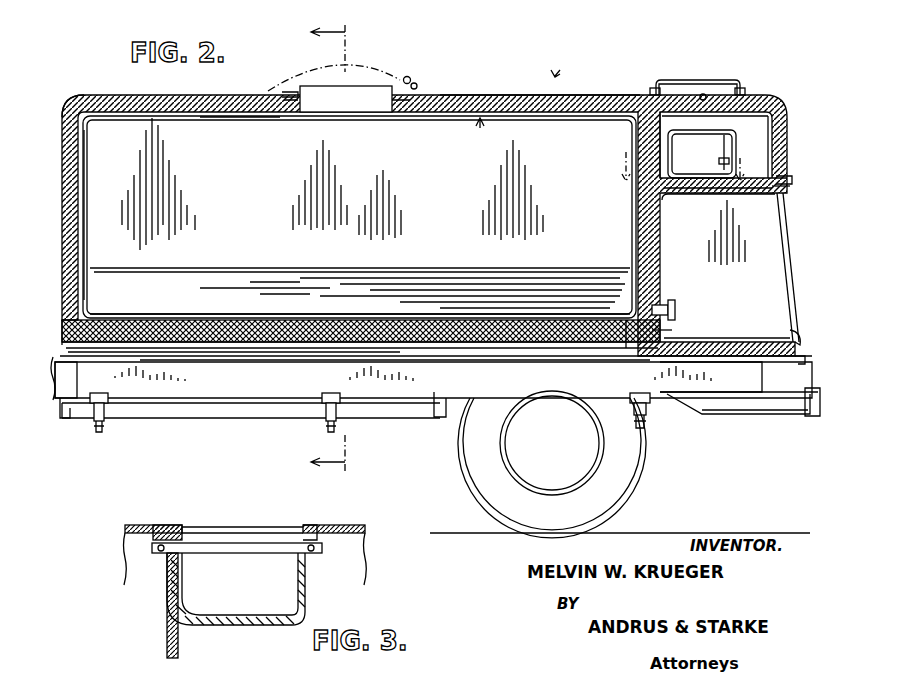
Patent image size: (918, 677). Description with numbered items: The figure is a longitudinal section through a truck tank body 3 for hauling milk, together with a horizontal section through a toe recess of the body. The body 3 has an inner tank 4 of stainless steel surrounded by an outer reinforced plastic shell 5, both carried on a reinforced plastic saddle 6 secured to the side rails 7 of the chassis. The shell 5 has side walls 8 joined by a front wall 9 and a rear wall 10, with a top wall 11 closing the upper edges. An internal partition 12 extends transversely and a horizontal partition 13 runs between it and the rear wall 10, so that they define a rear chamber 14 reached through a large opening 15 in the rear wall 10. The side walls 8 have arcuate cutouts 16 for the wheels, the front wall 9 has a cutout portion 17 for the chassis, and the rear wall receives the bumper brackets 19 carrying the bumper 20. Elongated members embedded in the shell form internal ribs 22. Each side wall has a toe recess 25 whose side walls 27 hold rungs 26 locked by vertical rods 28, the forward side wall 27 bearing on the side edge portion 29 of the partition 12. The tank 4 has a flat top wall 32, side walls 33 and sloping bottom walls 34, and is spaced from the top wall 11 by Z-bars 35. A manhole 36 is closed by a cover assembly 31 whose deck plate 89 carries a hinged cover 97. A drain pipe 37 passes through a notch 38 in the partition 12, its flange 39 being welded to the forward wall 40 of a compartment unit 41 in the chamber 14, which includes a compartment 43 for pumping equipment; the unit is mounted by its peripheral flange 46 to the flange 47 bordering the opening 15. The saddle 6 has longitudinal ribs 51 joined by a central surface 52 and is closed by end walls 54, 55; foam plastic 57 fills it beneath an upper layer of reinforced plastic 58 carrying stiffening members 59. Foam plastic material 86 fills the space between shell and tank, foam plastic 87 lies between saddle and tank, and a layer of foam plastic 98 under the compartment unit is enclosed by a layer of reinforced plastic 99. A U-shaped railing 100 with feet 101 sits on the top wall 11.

In FIG. 2, the tank body 3 is at (556, 76).
In FIG. 2, the inner tank 4 is at (399, 247).
In FIG. 2, the outer reinforced plastic shell 5 is at (596, 95).
In FIG. 2, the saddle 6 is at (211, 320).
In FIG. 2, the side rails 7 is at (196, 398).
In FIG. 3, the side walls 8 is at (150, 525).
In FIG. 2, the front wall 9 is at (68, 115).
In FIG. 2, the rear wall 10 is at (790, 125).
In FIG. 2, the top wall 11 is at (470, 96).
In FIG. 2, the internal partition 12 is at (661, 120).
In FIG. 3, the internal partition 12 is at (179, 645).
In FIG. 2, the horizontal partition 13 is at (756, 177).
In FIG. 2, the rear chamber 14 is at (700, 190).
In FIG. 2, the opening 15 is at (780, 207).
In FIG. 2, the arcuate cutouts 16 is at (440, 417).
In FIG. 2, the cutout portion 17 is at (64, 418).
In FIG. 2, the bumper brackets 19 is at (755, 414).
In FIG. 2, the bumper 20 is at (812, 416).
In FIG. 2, the internal ribs 22 is at (86, 176).
In FIG. 3, the toe recess 25 is at (246, 588).
In FIG. 2, the rungs 26 is at (721, 160).
In FIG. 3, the rungs 26 is at (246, 540).
In FIG. 3, the side walls of recess 27 is at (184, 596).
In FIG. 2, the vertical rods 28 is at (724, 136).
In FIG. 3, the vertical rods 28 is at (158, 552).
In FIG. 3, the side edge portion 29 is at (180, 526).
In FIG. 2, the cover assembly 31 is at (388, 71).
In FIG. 2, the top wall of tank 32 is at (226, 118).
In FIG. 2, the side walls of tank 33 is at (246, 206).
In FIG. 2, the sloping bottom walls 34 is at (128, 278).
In FIG. 2, the Z-bars 35 is at (298, 112).
In FIG. 2, the manhole 36 is at (304, 112).
In FIG. 2, the drain pipe 37 is at (678, 312).
In FIG. 2, the notch 38 is at (664, 330).
In FIG. 2, the flange 39 is at (666, 310).
In FIG. 2, the forward wall 40 is at (664, 236).
In FIG. 2, the compartment unit 41 is at (762, 240).
In FIG. 2, the compartment 43 is at (778, 272).
In FIG. 2, the peripheral flange 46 is at (792, 342).
In FIG. 2, the flange 47 is at (797, 364).
In FIG. 2, the longitudinal ribs 51 is at (445, 346).
In FIG. 2, the central surface 52 is at (86, 342).
In FIG. 2, the end wall 54 is at (66, 312).
In FIG. 2, the end wall 55 is at (630, 327).
In FIG. 2, the foam plastic 57 is at (260, 346).
In FIG. 2, the upper layer of reinforced plastic 58 is at (140, 322).
In FIG. 2, the stiffening members 59 is at (100, 324).
In FIG. 2, the foam plastic material 86 is at (163, 118).
In FIG. 2, the foam plastic 87 is at (252, 335).
In FIG. 2, the deck plate 89 is at (288, 92).
In FIG. 2, the cover 97 is at (411, 80).
In FIG. 2, the layer of foam plastic 98 is at (740, 342).
In FIG. 2, the layer of reinforced plastic 99 is at (728, 358).
In FIG. 2, the U-shaped railing 100 is at (697, 80).
In FIG. 2, the feet 101 is at (653, 88).